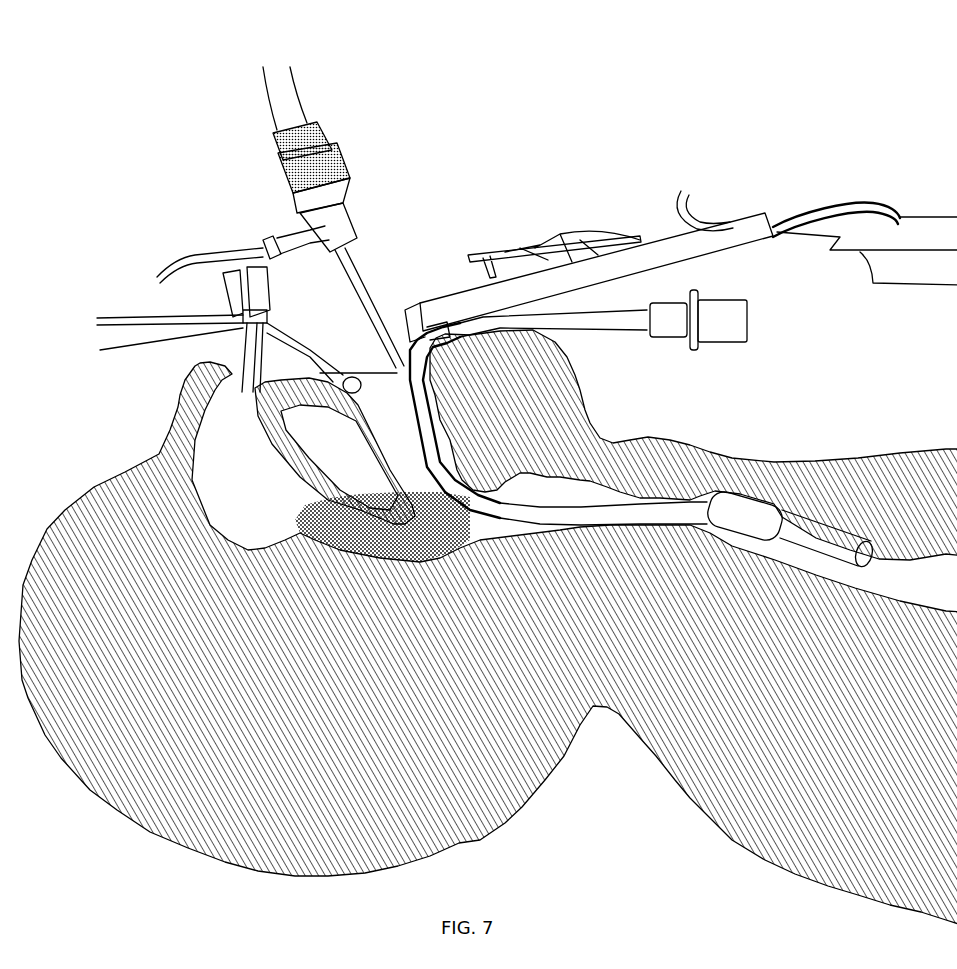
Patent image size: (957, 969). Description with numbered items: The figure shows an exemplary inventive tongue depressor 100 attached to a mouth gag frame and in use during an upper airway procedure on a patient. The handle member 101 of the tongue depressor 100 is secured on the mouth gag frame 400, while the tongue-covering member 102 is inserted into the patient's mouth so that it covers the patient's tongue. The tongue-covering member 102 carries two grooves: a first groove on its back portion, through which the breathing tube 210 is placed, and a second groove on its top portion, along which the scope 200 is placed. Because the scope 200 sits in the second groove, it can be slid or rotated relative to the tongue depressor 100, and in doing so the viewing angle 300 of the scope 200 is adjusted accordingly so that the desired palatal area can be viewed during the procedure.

The tongue depressor 100 is at (467, 222).
The handle member 101 is at (447, 336).
The tongue-covering member 102 is at (407, 348).
The scope 200 is at (367, 280).
The breathing tube 210 is at (669, 504).
The viewing angle 300 is at (300, 510).
The mouth gag frame 400 is at (737, 215).